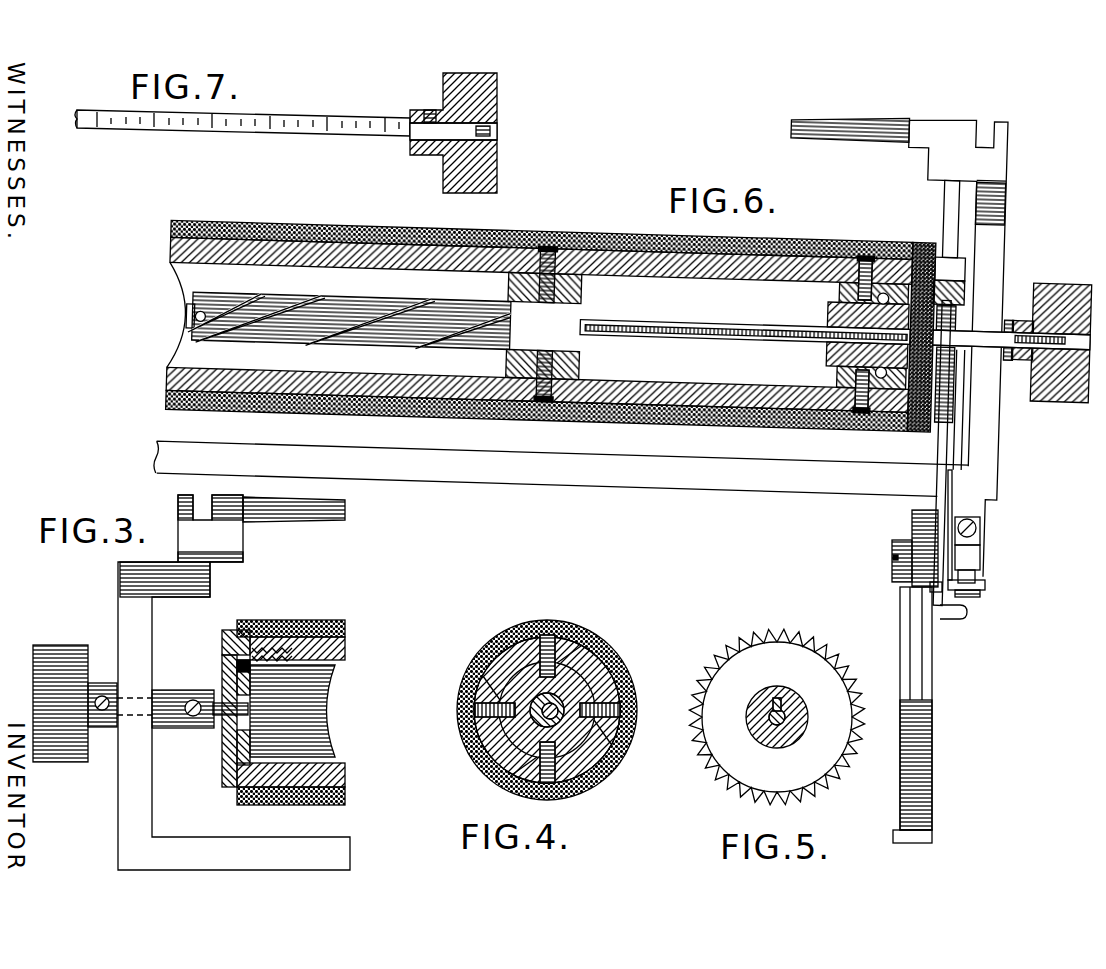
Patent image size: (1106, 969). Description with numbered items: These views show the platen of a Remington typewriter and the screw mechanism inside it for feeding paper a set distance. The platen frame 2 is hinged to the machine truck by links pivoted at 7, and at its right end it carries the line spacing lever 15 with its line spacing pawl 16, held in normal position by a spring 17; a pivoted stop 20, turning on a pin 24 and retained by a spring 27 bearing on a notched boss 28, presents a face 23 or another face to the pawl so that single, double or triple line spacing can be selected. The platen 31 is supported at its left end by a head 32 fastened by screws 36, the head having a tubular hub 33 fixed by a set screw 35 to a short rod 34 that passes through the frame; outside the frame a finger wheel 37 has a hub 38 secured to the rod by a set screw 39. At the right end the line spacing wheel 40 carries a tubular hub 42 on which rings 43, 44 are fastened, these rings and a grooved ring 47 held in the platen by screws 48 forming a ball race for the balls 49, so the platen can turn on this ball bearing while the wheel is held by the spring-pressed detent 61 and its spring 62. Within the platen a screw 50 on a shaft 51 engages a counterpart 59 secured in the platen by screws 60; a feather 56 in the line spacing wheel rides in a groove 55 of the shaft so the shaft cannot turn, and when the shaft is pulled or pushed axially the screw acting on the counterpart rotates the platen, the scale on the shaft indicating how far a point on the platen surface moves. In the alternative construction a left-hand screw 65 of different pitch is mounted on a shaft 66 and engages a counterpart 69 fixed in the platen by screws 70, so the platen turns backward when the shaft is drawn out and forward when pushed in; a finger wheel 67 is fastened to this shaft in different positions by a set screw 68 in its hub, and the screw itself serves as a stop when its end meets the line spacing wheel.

In FIG. 6, the platen frame 2 is at (620, 486).
In FIG. 3, the platen frame 2 is at (149, 630).
In FIG. 3, the pivot of links on platen frame 7 is at (201, 507).
In FIG. 6, the line spacing lever 15 is at (926, 668).
In FIG. 6, the line spacing pawl 16 is at (937, 448).
In FIG. 6, the spring 17 is at (966, 545).
In FIG. 6, the stop 20 is at (912, 566).
In FIG. 6, the face of stop 23 is at (930, 592).
In FIG. 6, the pin 24 is at (982, 592).
In FIG. 6, the spring 27 is at (976, 552).
In FIG. 6, the notched hub or boss 28 is at (968, 606).
In FIG. 6, the platen 31 is at (838, 250).
In FIG. 4, the platen 31 is at (601, 778).
In FIG. 3, the head 32 is at (222, 672).
In FIG. 3, the tubular hub 33 is at (175, 692).
In FIG. 3, the short rod 34 is at (248, 708).
In FIG. 3, the set screw 35 is at (193, 718).
In FIG. 3, the screws 36 is at (250, 625).
In FIG. 3, the finger wheel 37 is at (63, 648).
In FIG. 3, the hub 38 is at (100, 682).
In FIG. 3, the set screw 39 is at (102, 712).
In FIG. 6, the line spacing wheel 40 is at (956, 316).
In FIG. 5, the line spacing wheel 40 is at (812, 781).
In FIG. 6, the tubular hub 42 is at (830, 313).
In FIG. 6, the ring 43 is at (906, 402).
In FIG. 6, the ring 44 is at (830, 366).
In FIG. 6, the ring 47 is at (840, 398).
In FIG. 6, the screws 48 is at (863, 266).
In FIG. 6, the balls 49 is at (883, 296).
In FIG. 4, the screw 50 is at (476, 762).
In FIG. 4, the shaft 51 is at (563, 702).
In FIG. 6, the groove 55 is at (748, 334).
In FIG. 5, the groove 55 is at (770, 741).
In FIG. 5, the feather 56 is at (777, 698).
In FIG. 4, the block or counterpart 59 is at (580, 660).
In FIG. 4, the screws 60 is at (548, 633).
In FIG. 6, the spring-pressed roller or detent 61 is at (962, 290).
In FIG. 6, the spring 62 is at (943, 220).
In FIG. 6, the screw 65 is at (452, 310).
In FIG. 7, the shaft 66 is at (330, 137).
In FIG. 6, the shaft 66 is at (676, 326).
In FIG. 7, the finger wheel 67 is at (497, 85).
In FIG. 6, the finger wheel 67 is at (1050, 284).
In FIG. 7, the set screw 68 is at (424, 110).
In FIG. 6, the counterpart 69 is at (580, 288).
In FIG. 6, the screws 70 is at (547, 252).